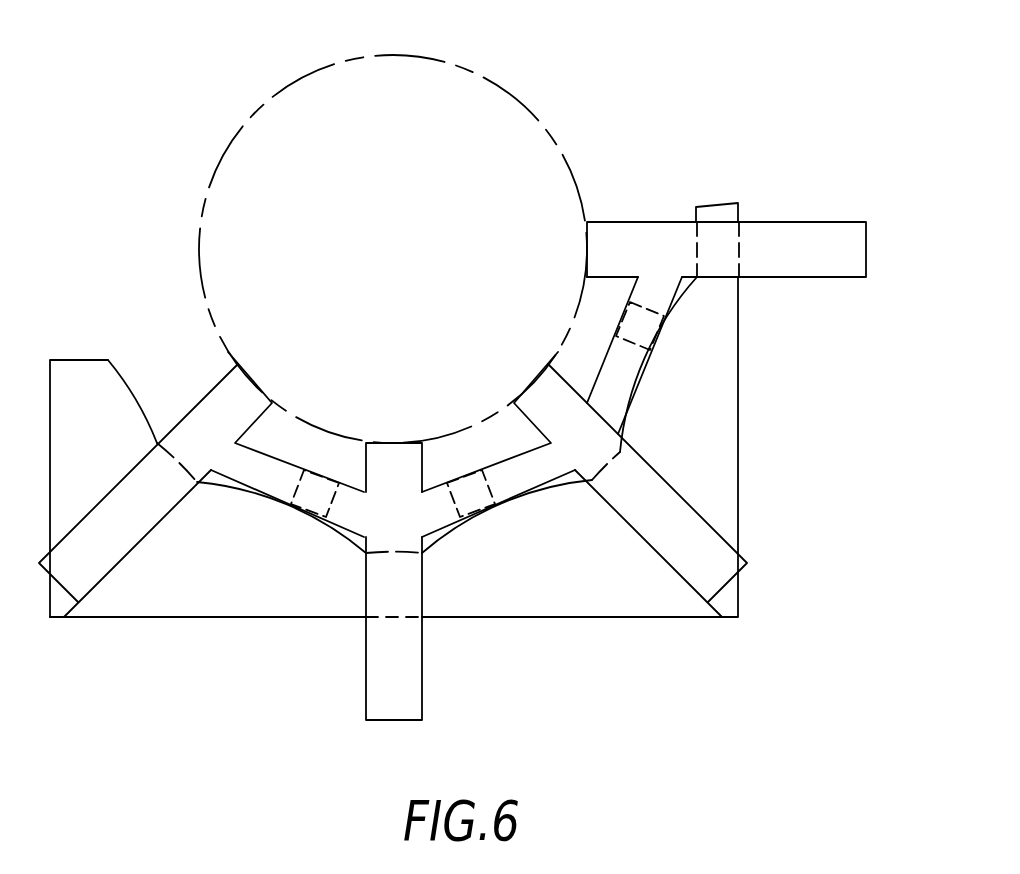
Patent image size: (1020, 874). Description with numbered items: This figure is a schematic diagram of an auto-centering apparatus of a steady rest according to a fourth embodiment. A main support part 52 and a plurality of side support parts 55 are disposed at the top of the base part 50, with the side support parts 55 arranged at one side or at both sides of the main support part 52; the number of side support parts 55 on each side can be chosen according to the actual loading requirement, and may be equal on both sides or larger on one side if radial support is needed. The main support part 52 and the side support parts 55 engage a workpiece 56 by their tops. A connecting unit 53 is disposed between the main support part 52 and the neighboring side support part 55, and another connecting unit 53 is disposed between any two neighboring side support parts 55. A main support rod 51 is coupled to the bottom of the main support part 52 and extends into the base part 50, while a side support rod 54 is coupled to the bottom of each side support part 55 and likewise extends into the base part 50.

The base part 50 is at (628, 595).
The main support rod 51 is at (407, 687).
The main support part 52 is at (378, 468).
The connecting unit 53 is at (477, 497).
The side support rod 54 is at (678, 512).
The side support part 55 is at (550, 397).
The pipe 56 is at (533, 157).